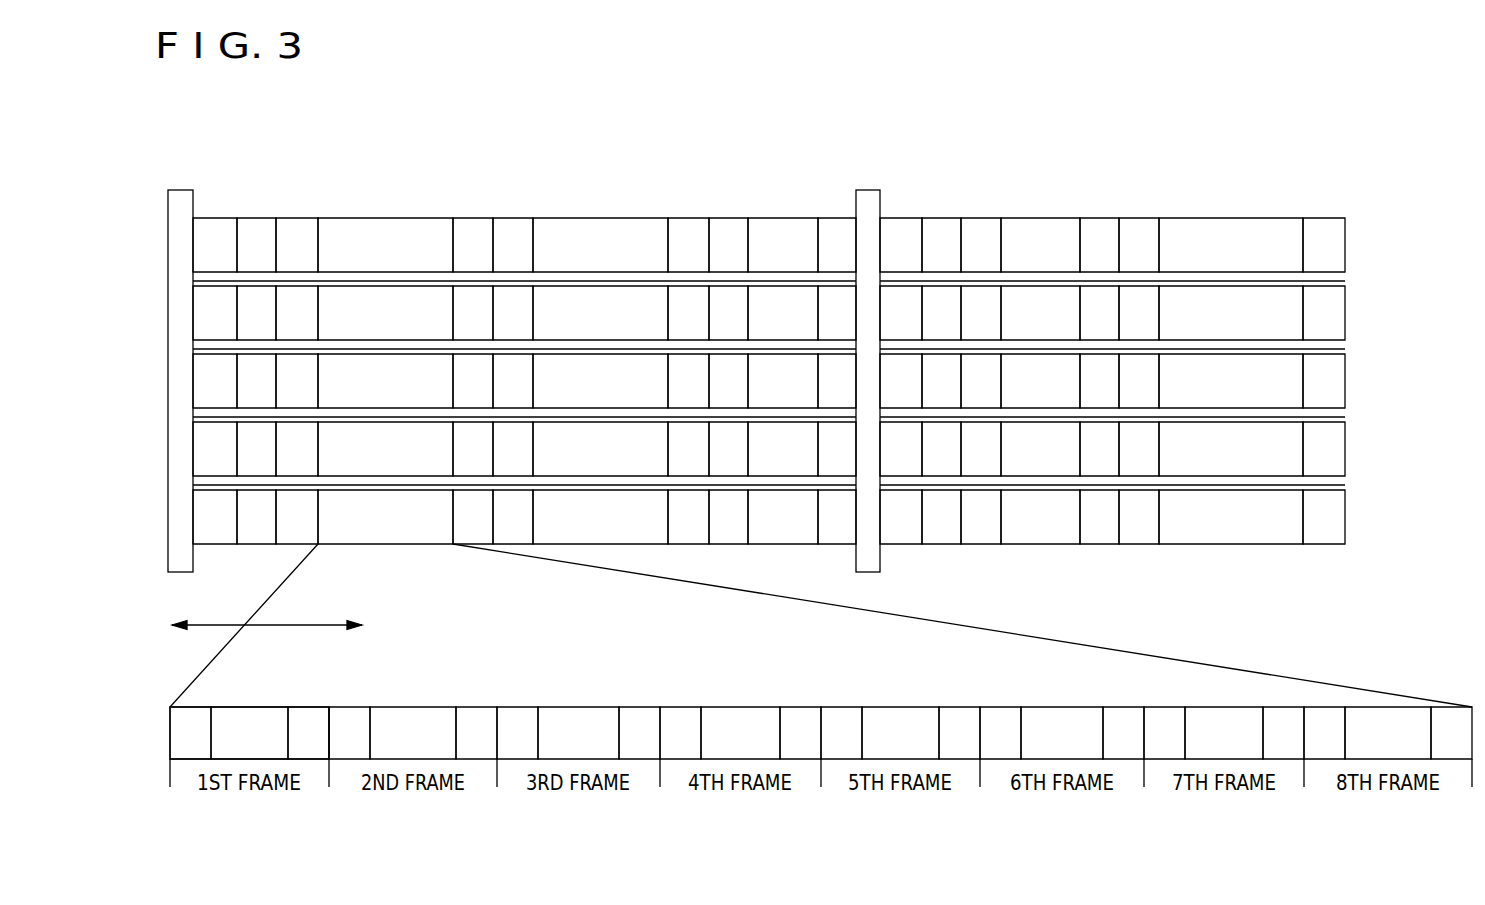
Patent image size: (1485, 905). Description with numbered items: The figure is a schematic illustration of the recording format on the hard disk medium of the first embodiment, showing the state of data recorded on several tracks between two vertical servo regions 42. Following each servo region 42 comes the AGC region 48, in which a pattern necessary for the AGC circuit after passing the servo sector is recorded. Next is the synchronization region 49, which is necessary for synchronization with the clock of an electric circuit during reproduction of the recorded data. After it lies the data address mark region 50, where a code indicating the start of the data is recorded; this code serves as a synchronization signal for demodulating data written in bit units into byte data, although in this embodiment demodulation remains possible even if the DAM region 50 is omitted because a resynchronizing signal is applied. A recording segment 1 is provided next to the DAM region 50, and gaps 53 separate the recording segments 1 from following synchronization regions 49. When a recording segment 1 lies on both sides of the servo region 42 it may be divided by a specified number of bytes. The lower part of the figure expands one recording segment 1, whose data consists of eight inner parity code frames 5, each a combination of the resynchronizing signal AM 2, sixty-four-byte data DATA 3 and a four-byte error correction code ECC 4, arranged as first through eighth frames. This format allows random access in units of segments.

The servo region 42 is at (175, 190).
The AGC region 48 is at (203, 218).
The synchronization region 49 is at (257, 218).
The data address mark (DAM) region 50 is at (297, 218).
The recording segment 1 is at (430, 218).
The gap 53 is at (462, 218).
The inner parity code frame 5 is at (290, 625).
The resynchronizing signal (AM) 2 is at (193, 760).
The data (DATA) 3 is at (247, 707).
The error correction code (ECC) 4 is at (322, 760).